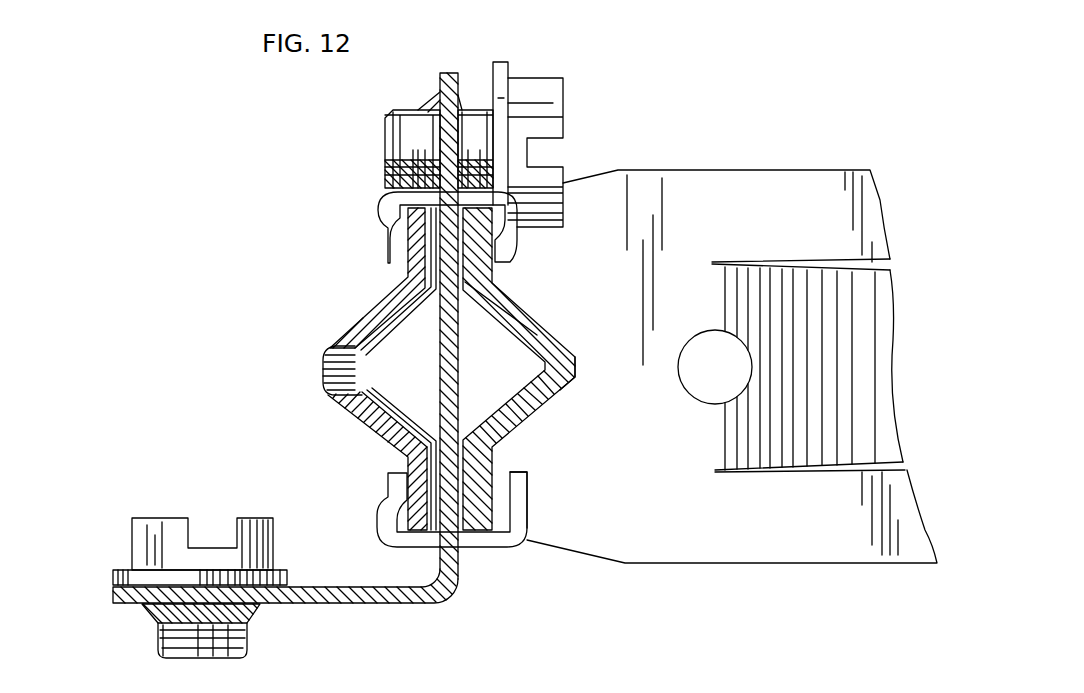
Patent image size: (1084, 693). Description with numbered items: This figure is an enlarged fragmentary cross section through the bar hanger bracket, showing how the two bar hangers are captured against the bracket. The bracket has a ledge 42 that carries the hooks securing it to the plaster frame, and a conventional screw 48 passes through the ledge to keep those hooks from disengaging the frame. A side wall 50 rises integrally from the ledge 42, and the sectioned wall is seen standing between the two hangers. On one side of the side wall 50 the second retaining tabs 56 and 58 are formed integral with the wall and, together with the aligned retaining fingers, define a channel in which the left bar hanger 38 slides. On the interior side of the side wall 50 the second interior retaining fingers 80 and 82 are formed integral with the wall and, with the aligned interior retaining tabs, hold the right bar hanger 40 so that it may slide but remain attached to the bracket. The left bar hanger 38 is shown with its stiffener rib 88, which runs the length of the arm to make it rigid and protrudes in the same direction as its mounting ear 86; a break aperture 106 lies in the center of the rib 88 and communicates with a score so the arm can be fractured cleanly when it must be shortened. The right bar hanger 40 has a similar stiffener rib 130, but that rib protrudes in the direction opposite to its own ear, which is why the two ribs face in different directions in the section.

The side wall 50 is at (440, 97).
The ledge 42 is at (337, 603).
The second retaining tab 58 is at (513, 210).
The second interior retaining finger 82 is at (388, 237).
The second interior retaining finger 80 is at (385, 505).
The second retaining tab 56 is at (520, 487).
The left bar hanger 38 is at (362, 310).
The break aperture 106 is at (335, 360).
The stiffener rib 88 is at (360, 417).
The right bar hanger 40 is at (557, 327).
The stiffener rib 130 is at (560, 386).
The mounting ear 86 is at (782, 182).
The screw 48 is at (147, 530).